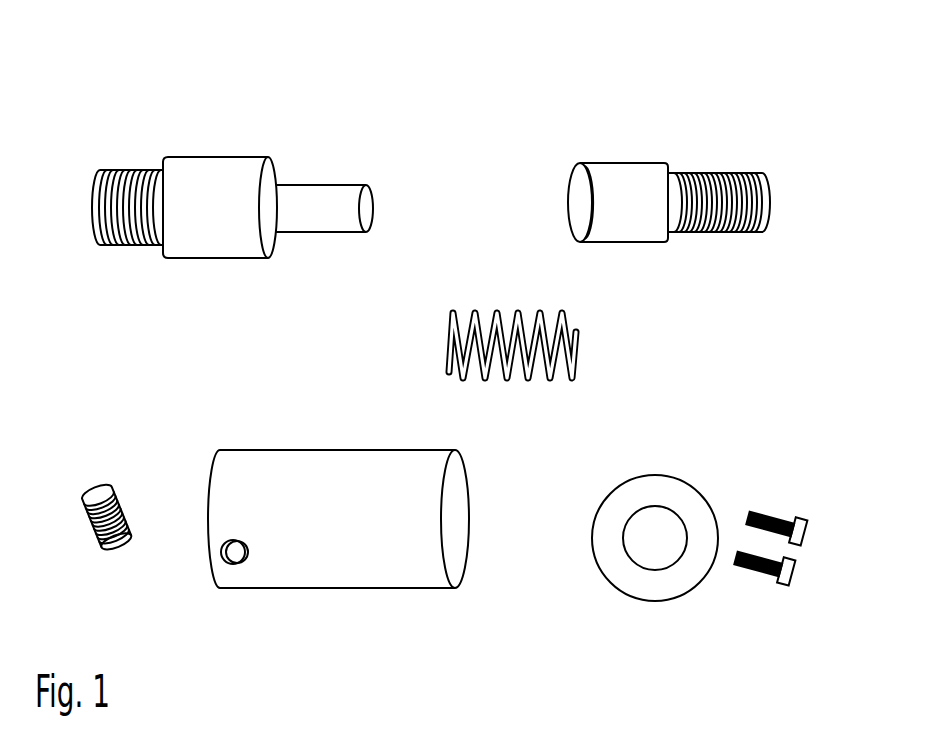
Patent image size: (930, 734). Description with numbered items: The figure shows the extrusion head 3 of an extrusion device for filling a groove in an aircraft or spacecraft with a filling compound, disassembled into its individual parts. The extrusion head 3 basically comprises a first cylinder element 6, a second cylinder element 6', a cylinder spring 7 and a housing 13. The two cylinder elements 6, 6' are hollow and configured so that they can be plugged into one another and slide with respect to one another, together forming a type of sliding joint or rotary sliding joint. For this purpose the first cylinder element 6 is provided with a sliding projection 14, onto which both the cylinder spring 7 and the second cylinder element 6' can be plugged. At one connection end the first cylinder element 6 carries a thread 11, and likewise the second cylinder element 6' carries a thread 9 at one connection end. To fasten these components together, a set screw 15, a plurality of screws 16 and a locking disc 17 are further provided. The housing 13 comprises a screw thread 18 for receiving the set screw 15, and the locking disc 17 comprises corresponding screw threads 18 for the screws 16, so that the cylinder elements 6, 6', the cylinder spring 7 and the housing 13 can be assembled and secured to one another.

The extrusion head 3 is at (99, 68).
The first cylinder element 6 is at (220, 171).
The second cylinder element 6' is at (618, 165).
The cylinder spring 7 is at (497, 308).
The thread 9 is at (725, 187).
The thread 11 is at (127, 170).
The housing 13 is at (290, 456).
The sliding projection 14 is at (332, 183).
The set screw 15 is at (102, 487).
The screws 16 is at (775, 517).
The locking disc 17 is at (675, 477).
The screw thread 18 is at (233, 564).